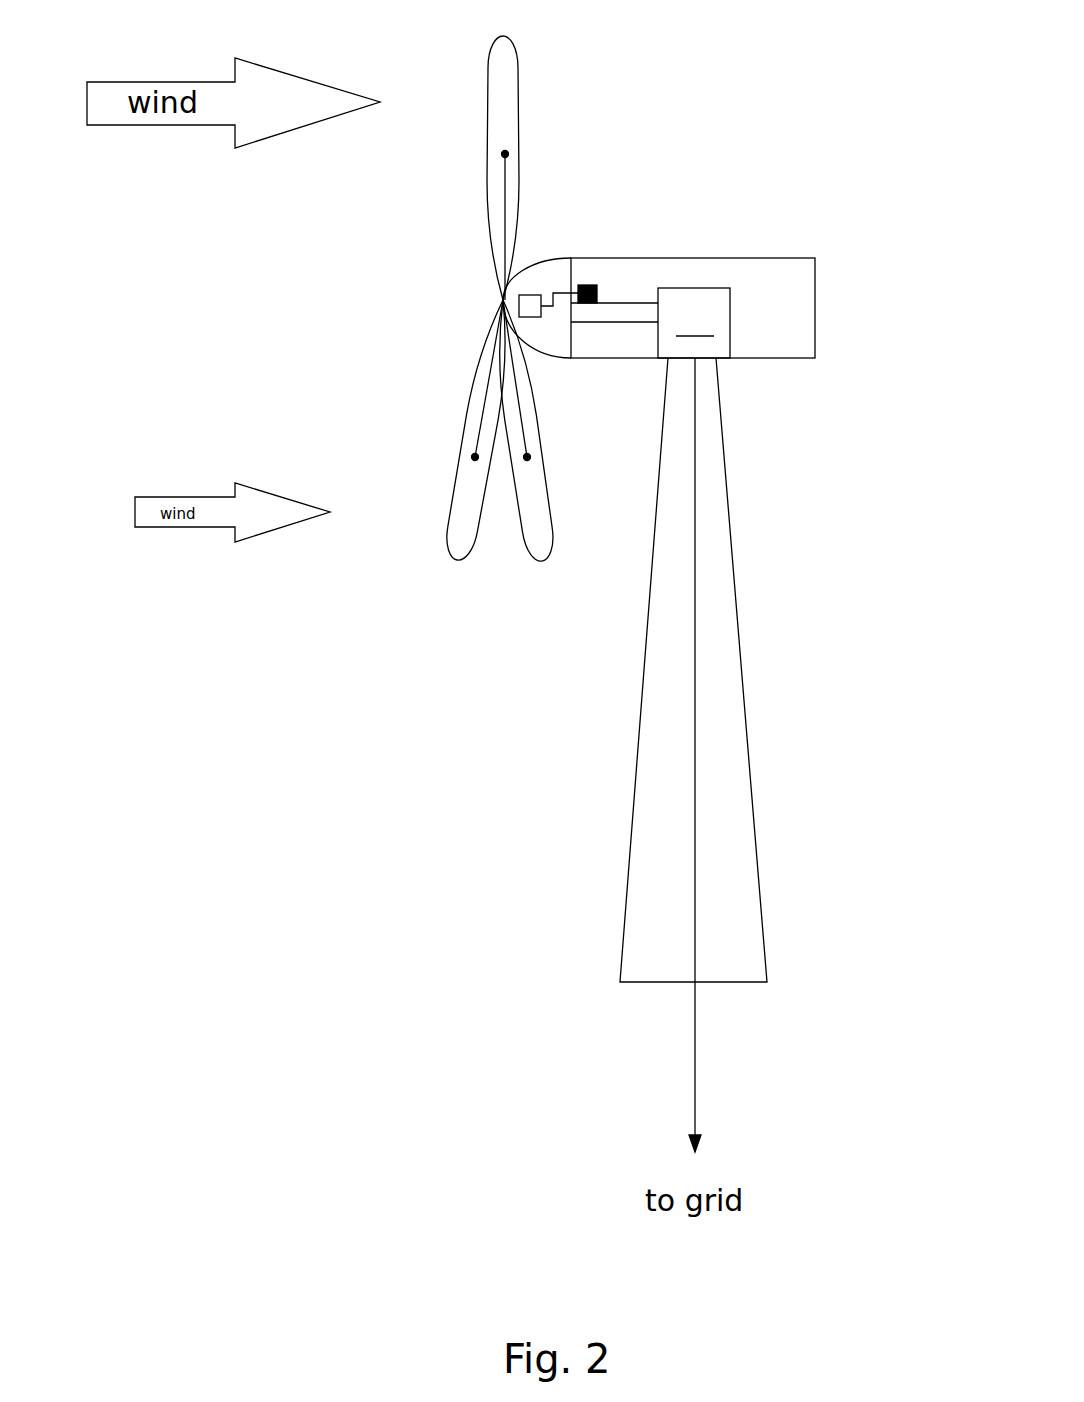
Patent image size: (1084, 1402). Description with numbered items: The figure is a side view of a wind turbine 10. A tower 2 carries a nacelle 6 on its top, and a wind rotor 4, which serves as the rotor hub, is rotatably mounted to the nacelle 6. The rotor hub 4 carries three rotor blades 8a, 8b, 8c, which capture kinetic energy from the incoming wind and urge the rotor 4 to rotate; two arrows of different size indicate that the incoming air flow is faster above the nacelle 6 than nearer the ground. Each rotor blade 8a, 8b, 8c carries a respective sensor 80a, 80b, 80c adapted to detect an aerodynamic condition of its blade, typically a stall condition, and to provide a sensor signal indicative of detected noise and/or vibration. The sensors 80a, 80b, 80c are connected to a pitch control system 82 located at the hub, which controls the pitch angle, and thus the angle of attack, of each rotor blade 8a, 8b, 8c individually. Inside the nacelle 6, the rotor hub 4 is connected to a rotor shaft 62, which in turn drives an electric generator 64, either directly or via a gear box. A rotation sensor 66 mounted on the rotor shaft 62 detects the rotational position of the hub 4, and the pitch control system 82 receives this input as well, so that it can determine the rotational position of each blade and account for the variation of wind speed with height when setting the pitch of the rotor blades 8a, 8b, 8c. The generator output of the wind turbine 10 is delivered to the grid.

The wind turbine 10 is at (908, 60).
The tower 2 is at (754, 826).
The nacelle 6 is at (815, 305).
The wind rotor 4 is at (547, 355).
The rotor blade 8a is at (504, 38).
The rotor blade 8b is at (542, 560).
The rotor blade 8c is at (459, 560).
The sensor 80a is at (505, 154).
The sensor 80b is at (527, 457).
The sensor 80c is at (475, 457).
The pitch control system 82 is at (529, 295).
The rotation sensor 66 is at (587, 285).
The rotor shaft 62 is at (643, 303).
The electric generator 64 is at (694, 323).